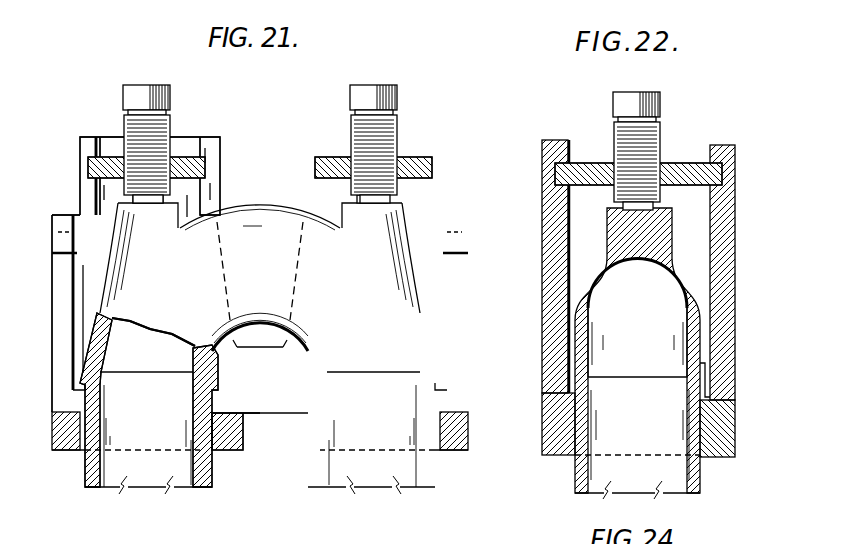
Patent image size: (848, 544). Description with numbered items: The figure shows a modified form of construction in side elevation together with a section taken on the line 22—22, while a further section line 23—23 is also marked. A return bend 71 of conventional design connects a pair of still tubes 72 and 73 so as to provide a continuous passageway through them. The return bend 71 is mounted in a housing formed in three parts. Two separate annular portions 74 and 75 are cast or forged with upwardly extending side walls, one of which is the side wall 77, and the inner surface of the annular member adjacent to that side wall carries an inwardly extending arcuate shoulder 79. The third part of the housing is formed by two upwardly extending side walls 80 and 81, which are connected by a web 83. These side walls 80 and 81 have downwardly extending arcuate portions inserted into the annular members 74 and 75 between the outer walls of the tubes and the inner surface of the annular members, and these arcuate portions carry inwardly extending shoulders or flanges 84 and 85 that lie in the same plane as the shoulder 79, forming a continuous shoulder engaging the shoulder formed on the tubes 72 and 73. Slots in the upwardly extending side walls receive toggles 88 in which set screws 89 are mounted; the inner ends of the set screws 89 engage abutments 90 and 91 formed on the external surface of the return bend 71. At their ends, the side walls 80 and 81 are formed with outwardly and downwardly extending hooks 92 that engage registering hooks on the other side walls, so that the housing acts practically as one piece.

In FIG. 21, the section line 22— 22 is at (377, 85).
In FIG. 21, the section line 23— 23 is at (30, 358).
In FIG. 21, the return bend 71 is at (260, 262).
In FIG. 22, the return bend 71 is at (637, 318).
In FIG. 21, the still tube 72 is at (148, 433).
In FIG. 21, the still tube 73 is at (371, 433).
In FIG. 22, the still tube 73 is at (637, 444).
In FIG. 21, the annular portion 74 is at (64, 452).
In FIG. 21, the annular portion 75 is at (446, 453).
In FIG. 22, the annular portion 75 is at (735, 445).
In FIG. 22, the side wall 77 is at (545, 362).
In FIG. 22, the arcuate shoulder 79 is at (572, 400).
In FIG. 21, the side wall 80 is at (62, 349).
In FIG. 21, the side wall 81 is at (460, 356).
In FIG. 22, the side wall 81 is at (731, 292).
In FIG. 21, the web 83 is at (260, 363).
In FIG. 21, the shoulder or flange 84 is at (80, 391).
In FIG. 21, the shoulder or flange 85 is at (438, 396).
In FIG. 22, the shoulder or flange 85 is at (708, 398).
In FIG. 21, the toggle 88 is at (196, 173).
In FIG. 22, the toggle 88 is at (570, 172).
In FIG. 21, the set screw 89 is at (172, 120).
In FIG. 22, the set screw 89 is at (618, 114).
In FIG. 21, the abutment 90 is at (139, 254).
In FIG. 21, the abutment 91 is at (381, 254).
In FIG. 22, the abutment 91 is at (637, 350).
In FIG. 21, the hook 92 is at (63, 245).